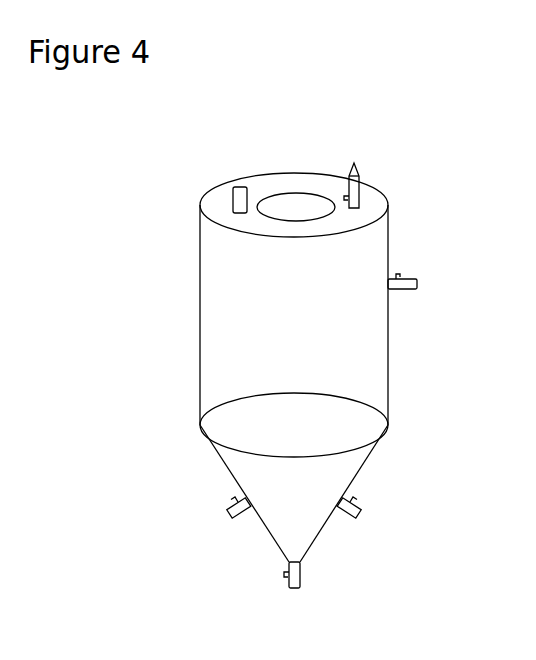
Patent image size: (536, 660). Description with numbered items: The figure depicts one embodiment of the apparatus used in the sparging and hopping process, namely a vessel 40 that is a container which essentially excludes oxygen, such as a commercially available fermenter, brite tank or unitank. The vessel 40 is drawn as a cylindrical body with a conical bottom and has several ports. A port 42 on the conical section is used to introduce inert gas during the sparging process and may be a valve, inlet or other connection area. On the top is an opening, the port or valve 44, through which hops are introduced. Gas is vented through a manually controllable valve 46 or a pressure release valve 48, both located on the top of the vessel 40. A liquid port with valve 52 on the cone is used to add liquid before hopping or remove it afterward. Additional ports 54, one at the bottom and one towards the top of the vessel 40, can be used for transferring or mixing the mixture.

The vessel 40 is at (200, 357).
The port 42 is at (223, 511).
The port or valve 44 is at (293, 188).
The manually controllable valve 46 is at (358, 165).
The pressure release valve 48 is at (240, 214).
The liquid port with valve 52 is at (363, 507).
The additional ports 54 is at (405, 276).